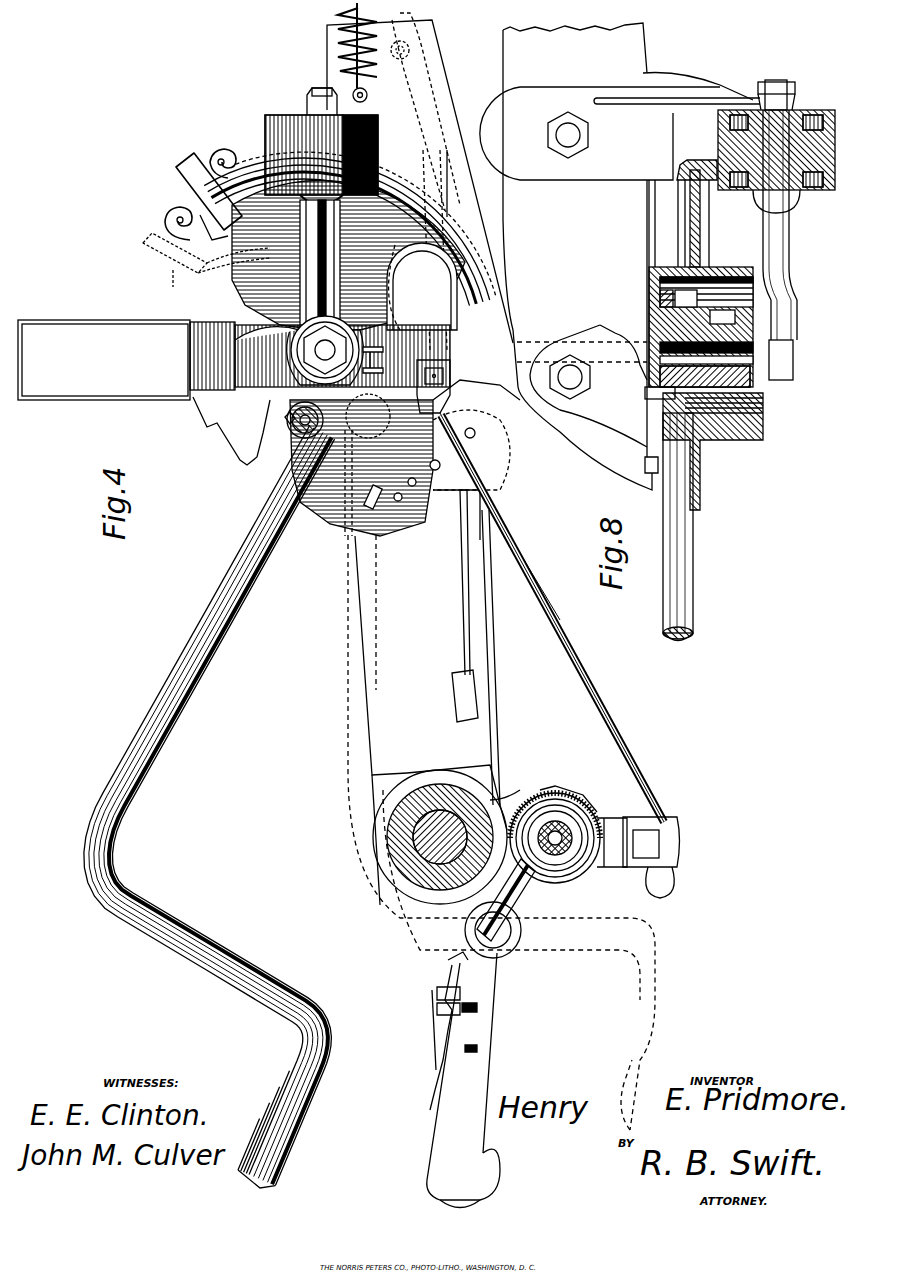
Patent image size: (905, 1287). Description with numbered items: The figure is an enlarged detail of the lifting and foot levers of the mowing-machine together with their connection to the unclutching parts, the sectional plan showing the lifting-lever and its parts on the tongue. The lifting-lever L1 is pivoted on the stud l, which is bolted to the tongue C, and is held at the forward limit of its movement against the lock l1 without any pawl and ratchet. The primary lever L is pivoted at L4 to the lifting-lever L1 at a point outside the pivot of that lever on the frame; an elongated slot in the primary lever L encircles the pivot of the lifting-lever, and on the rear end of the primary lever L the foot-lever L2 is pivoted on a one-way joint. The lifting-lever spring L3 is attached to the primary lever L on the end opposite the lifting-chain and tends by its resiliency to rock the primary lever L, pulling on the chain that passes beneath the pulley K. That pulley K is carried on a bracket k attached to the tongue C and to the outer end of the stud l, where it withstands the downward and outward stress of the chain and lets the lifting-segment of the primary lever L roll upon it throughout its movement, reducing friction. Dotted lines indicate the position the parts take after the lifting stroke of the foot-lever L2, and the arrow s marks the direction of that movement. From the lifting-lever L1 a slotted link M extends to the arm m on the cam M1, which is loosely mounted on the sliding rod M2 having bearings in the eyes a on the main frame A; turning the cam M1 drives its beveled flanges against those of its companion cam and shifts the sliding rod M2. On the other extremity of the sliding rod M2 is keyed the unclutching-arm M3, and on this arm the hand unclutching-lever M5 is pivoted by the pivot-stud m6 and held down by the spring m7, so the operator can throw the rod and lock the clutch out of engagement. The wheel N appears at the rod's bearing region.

In FIG. 4, the tongue C is at (427, 80).
In FIG. 8, the tongue C is at (590, 256).
In FIG. 4, the pulley K is at (305, 146).
In FIG. 4, the bracket k is at (403, 277).
In FIG. 8, the bracket k is at (620, 260).
In FIG. 4, the primary lever L is at (247, 200).
In FIG. 8, the primary lever L is at (710, 227).
In FIG. 4, the lifting-lever L1 is at (234, 390).
In FIG. 8, the lifting-lever L1 is at (747, 313).
In FIG. 4, the foot-lever L2 is at (175, 692).
In FIG. 8, the foot-lever L2 is at (693, 595).
In FIG. 4, the lifting-lever spring L3 is at (337, 55).
In FIG. 8, the pivot of the primary lever L4 is at (657, 280).
In FIG. 8, the stud l is at (650, 322).
In FIG. 4, the lock l1 is at (206, 270).
In FIG. 4, the direction arrow s is at (322, 15).
In FIG. 4, the link M is at (587, 697).
In FIG. 4, the cam M1 is at (558, 790).
In FIG. 4, the sliding rod M2 is at (527, 927).
In FIG. 4, the unclutching-arm M3 is at (463, 1178).
In FIG. 4, the hand unclutching-lever M5 is at (443, 1100).
In FIG. 4, the arm m is at (624, 867).
In FIG. 4, the pivot-stud m6 is at (463, 1047).
In FIG. 4, the spring m7 is at (430, 1028).
In FIG. 4, the wheel N is at (440, 825).
In FIG. 4, the main frame A is at (483, 753).
In FIG. 4, the eyes a is at (508, 810).